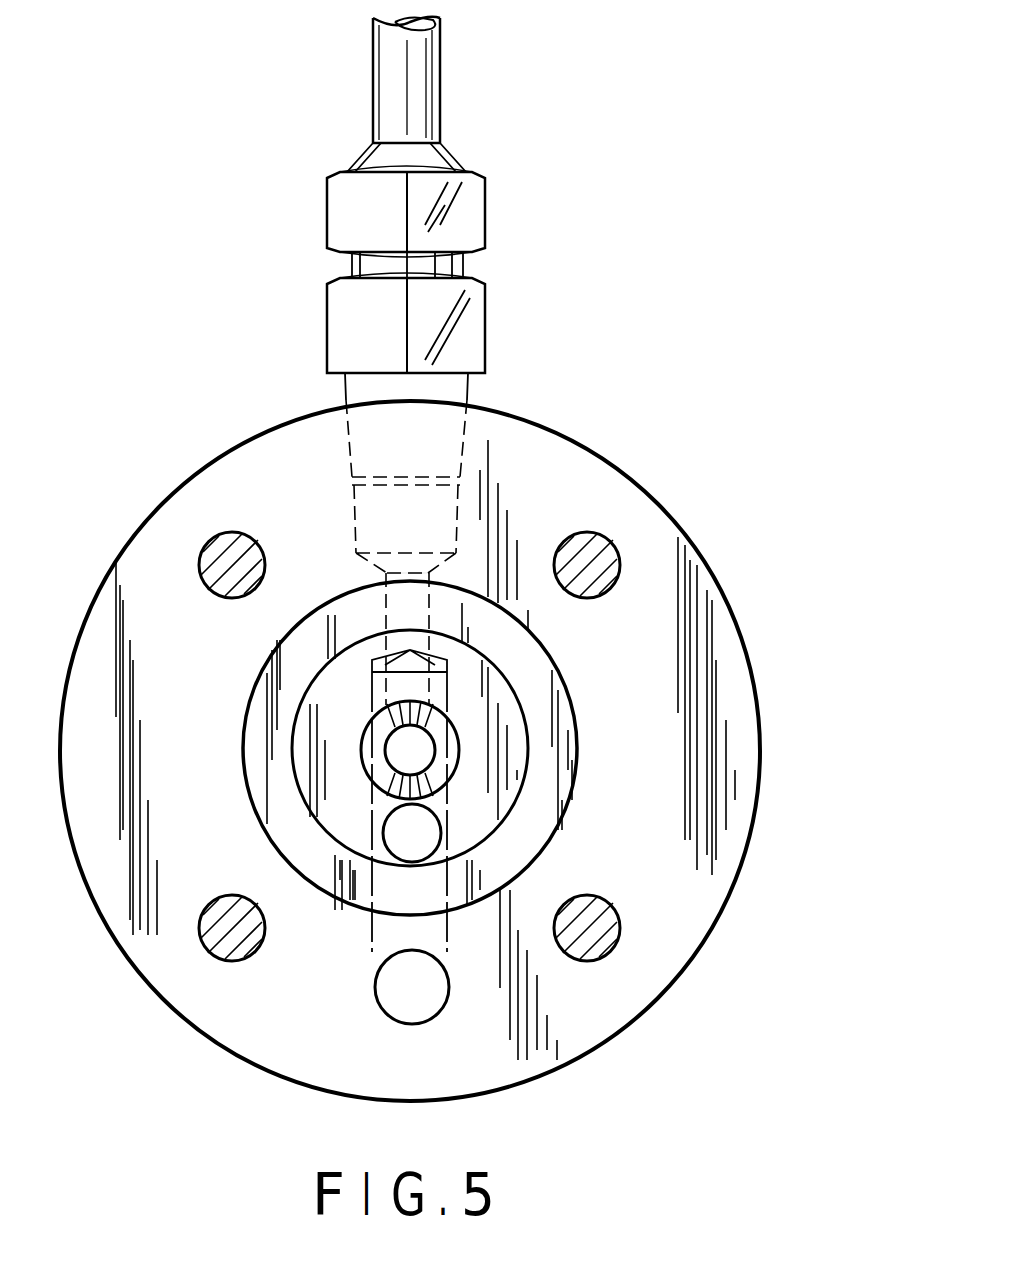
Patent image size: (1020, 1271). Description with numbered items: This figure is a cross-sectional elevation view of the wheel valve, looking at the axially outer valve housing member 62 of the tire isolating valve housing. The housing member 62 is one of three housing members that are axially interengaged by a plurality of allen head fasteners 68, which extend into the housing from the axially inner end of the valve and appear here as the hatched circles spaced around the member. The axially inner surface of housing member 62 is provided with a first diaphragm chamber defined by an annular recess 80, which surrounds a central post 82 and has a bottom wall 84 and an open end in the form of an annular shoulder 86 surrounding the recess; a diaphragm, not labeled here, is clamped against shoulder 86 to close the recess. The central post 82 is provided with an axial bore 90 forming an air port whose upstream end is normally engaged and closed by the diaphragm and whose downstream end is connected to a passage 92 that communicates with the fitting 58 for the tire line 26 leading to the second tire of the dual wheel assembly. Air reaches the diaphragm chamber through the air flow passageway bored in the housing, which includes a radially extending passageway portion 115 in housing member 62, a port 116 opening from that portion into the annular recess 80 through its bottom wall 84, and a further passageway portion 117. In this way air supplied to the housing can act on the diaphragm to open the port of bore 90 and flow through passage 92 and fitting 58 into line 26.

The line 26 is at (392, 80).
The fitting 58 is at (352, 210).
The axially outer valve housing member 62 is at (697, 657).
The allen head fasteners 68 is at (226, 548).
The annular recess 80 is at (303, 783).
The central post 82 is at (362, 748).
The bottom wall 84 is at (305, 715).
The annular shoulder 86 is at (282, 673).
The axial bore 90 is at (433, 752).
The passage 92 is at (388, 622).
The radially extending passageway portion 115 is at (372, 952).
The port 116 is at (435, 846).
The passageway portion 117 is at (420, 1022).